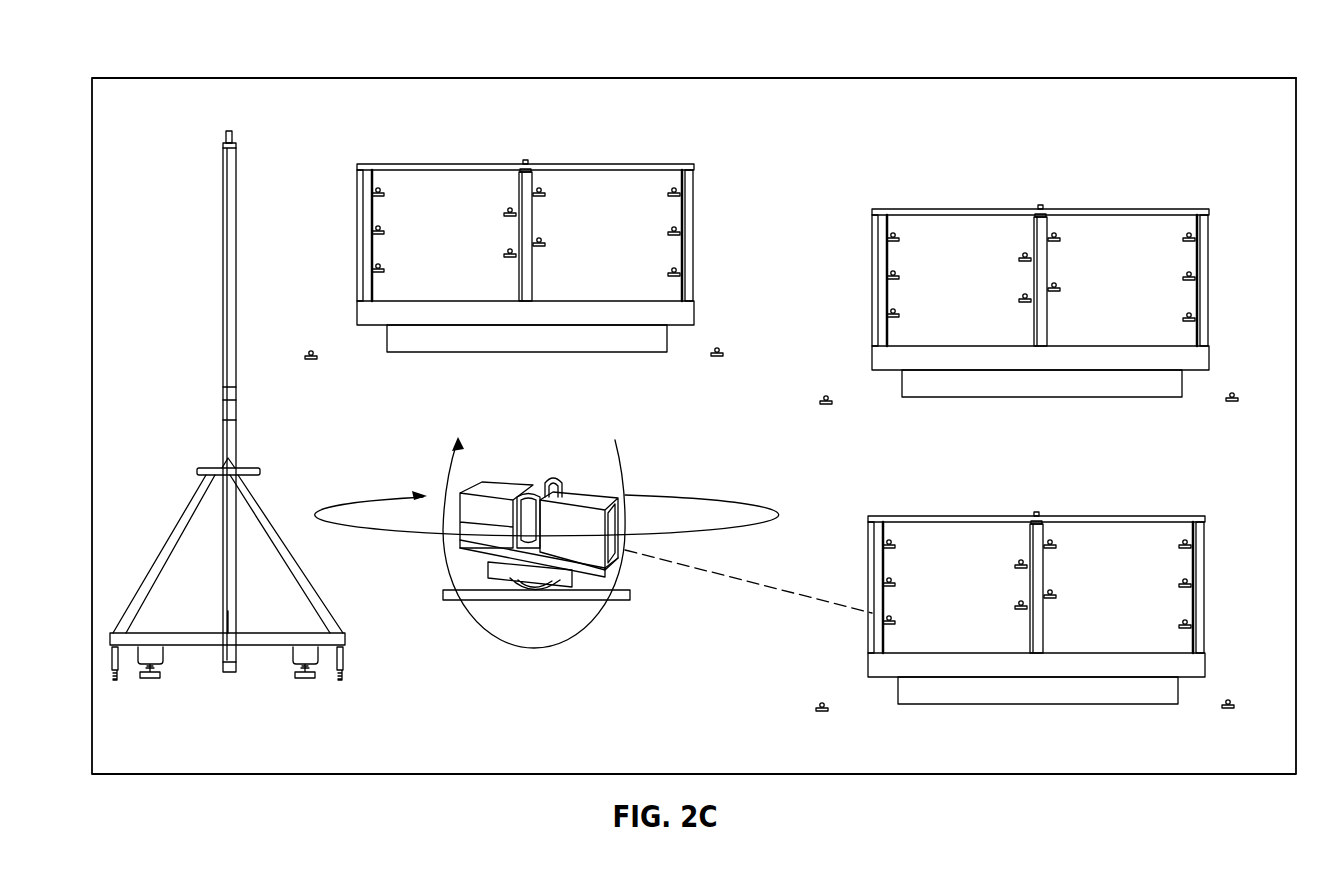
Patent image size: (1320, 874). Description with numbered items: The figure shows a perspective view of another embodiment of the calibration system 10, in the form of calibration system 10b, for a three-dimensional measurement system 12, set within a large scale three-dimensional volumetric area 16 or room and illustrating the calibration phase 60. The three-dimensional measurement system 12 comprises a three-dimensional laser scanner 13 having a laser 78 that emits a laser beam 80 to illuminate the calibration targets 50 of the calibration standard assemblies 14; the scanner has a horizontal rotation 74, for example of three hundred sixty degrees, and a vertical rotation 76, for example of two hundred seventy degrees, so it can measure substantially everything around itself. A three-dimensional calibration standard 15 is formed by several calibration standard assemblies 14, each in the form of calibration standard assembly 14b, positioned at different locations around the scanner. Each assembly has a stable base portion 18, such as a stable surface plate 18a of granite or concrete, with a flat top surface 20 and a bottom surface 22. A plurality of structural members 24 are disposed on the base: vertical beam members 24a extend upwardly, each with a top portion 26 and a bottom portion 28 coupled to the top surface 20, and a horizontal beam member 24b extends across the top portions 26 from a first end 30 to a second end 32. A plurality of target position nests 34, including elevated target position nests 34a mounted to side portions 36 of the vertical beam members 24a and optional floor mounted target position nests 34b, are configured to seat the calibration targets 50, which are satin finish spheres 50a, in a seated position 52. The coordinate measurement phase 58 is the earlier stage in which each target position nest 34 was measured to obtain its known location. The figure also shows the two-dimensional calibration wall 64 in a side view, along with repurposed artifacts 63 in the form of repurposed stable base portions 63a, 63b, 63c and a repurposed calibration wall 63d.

The calibration system 10 is at (1144, 72).
The calibration system 10b is at (1048, 78).
The three-dimensional measurement system 12 is at (668, 644).
The three-dimensional laser scanner 13 is at (608, 557).
The calibration standard assembly 14 is at (695, 152).
The calibration standard assembly 14b is at (620, 164).
The three-dimensional calibration standard 15 is at (383, 78).
The large scale three-dimensional volumetric area 16 is at (357, 118).
The stable base portion 18 is at (670, 328).
The stable surface plate 18a is at (387, 328).
The top surface 20 is at (610, 301).
The bottom surface 22 is at (563, 353).
The structural members 24 is at (653, 162).
The vertical beam member 24a is at (362, 248).
The horizontal beam member 24b is at (433, 164).
The top portion 26 is at (357, 170).
The bottom portion 28 is at (535, 300).
The first end 30 is at (382, 164).
The second end 32 is at (695, 167).
The target position nests 34 is at (388, 227).
The elevated target position nest 34a is at (386, 234).
The floor mounted target position nest 34b is at (312, 360).
The side portion 36 is at (372, 230).
The calibration targets 50 is at (382, 190).
The satin finish sphere 50a is at (387, 194).
The seated position 52 is at (678, 275).
The coordinate measurement phase 58 is at (718, 192).
The calibration phase 60 is at (291, 142).
The repurposed artifacts 63 is at (158, 466).
The repurposed stable base portion 63a is at (499, 164).
The repurposed stable base portion 63b is at (1035, 194).
The repurposed stable base portion 63c is at (1030, 501).
The repurposed calibration wall 63d is at (222, 423).
The two-dimensional calibration wall 64 is at (222, 337).
The horizontal rotation 74 is at (690, 490).
The vertical rotation 76 is at (447, 481).
The laser 78 is at (612, 576).
The laser beam 80 is at (730, 577).